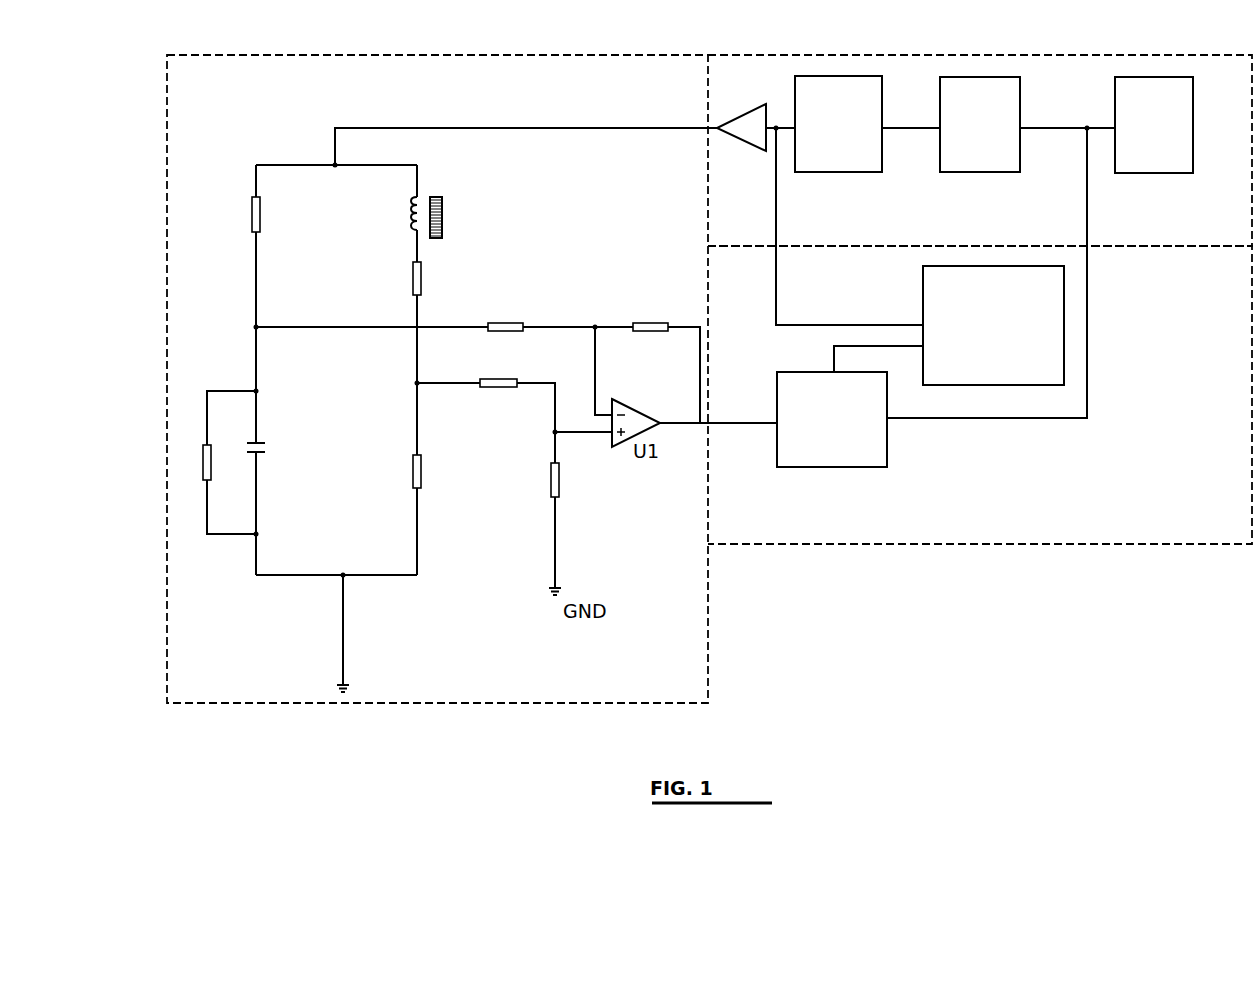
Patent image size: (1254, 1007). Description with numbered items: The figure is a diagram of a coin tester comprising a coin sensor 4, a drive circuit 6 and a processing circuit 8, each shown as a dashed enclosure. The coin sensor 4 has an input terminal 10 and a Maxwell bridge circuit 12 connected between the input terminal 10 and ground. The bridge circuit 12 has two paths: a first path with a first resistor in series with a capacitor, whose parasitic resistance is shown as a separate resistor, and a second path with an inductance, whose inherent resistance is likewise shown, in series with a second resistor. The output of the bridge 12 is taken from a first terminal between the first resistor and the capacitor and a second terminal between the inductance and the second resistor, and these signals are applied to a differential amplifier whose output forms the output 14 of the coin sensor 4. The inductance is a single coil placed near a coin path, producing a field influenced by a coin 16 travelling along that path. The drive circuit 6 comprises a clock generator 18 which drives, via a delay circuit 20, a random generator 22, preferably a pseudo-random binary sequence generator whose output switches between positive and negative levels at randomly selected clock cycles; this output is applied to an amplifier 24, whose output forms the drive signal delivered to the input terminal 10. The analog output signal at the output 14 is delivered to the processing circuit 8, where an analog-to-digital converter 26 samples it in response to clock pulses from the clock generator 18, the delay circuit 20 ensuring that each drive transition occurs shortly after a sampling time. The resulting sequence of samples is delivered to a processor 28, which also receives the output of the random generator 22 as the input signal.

The coin sensor 4 is at (437, 379).
The drive circuit 6 is at (980, 150).
The processing circuit 8 is at (980, 395).
The input terminal 10 is at (526, 129).
The Maxwell bridge circuit 12 is at (311, 428).
The output of the coin sensor 14 is at (718, 435).
The coin 16 is at (451, 209).
The clock generator 18 is at (1106, 125).
The delay circuit 20 is at (951, 124).
The random generator 22 is at (838, 124).
The amplifier 24 is at (756, 112).
The analog-to-digital converter 26 is at (933, 297).
The processor 28 is at (919, 256).